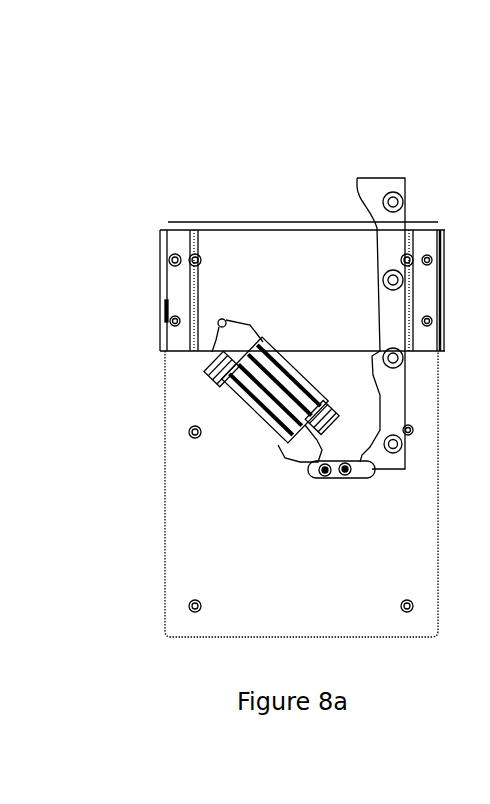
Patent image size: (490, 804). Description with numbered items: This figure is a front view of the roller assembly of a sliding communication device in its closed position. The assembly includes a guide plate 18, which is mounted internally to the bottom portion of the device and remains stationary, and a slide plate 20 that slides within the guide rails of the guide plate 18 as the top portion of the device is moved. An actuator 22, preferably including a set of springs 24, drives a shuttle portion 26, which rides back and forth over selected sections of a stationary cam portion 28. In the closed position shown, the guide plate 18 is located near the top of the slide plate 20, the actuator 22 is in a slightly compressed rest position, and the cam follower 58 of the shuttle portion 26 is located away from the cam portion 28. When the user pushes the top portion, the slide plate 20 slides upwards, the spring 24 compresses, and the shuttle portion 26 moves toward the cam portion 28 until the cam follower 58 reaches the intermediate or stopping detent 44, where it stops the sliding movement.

The guide plate 18 is at (245, 241).
The slide plate 20 is at (417, 624).
The actuator 22 is at (284, 460).
The spring 24 is at (238, 412).
The shuttle portion 26 is at (326, 477).
The cam portion 28 is at (361, 192).
The detent 44 is at (377, 360).
The cam follower 58 is at (346, 472).